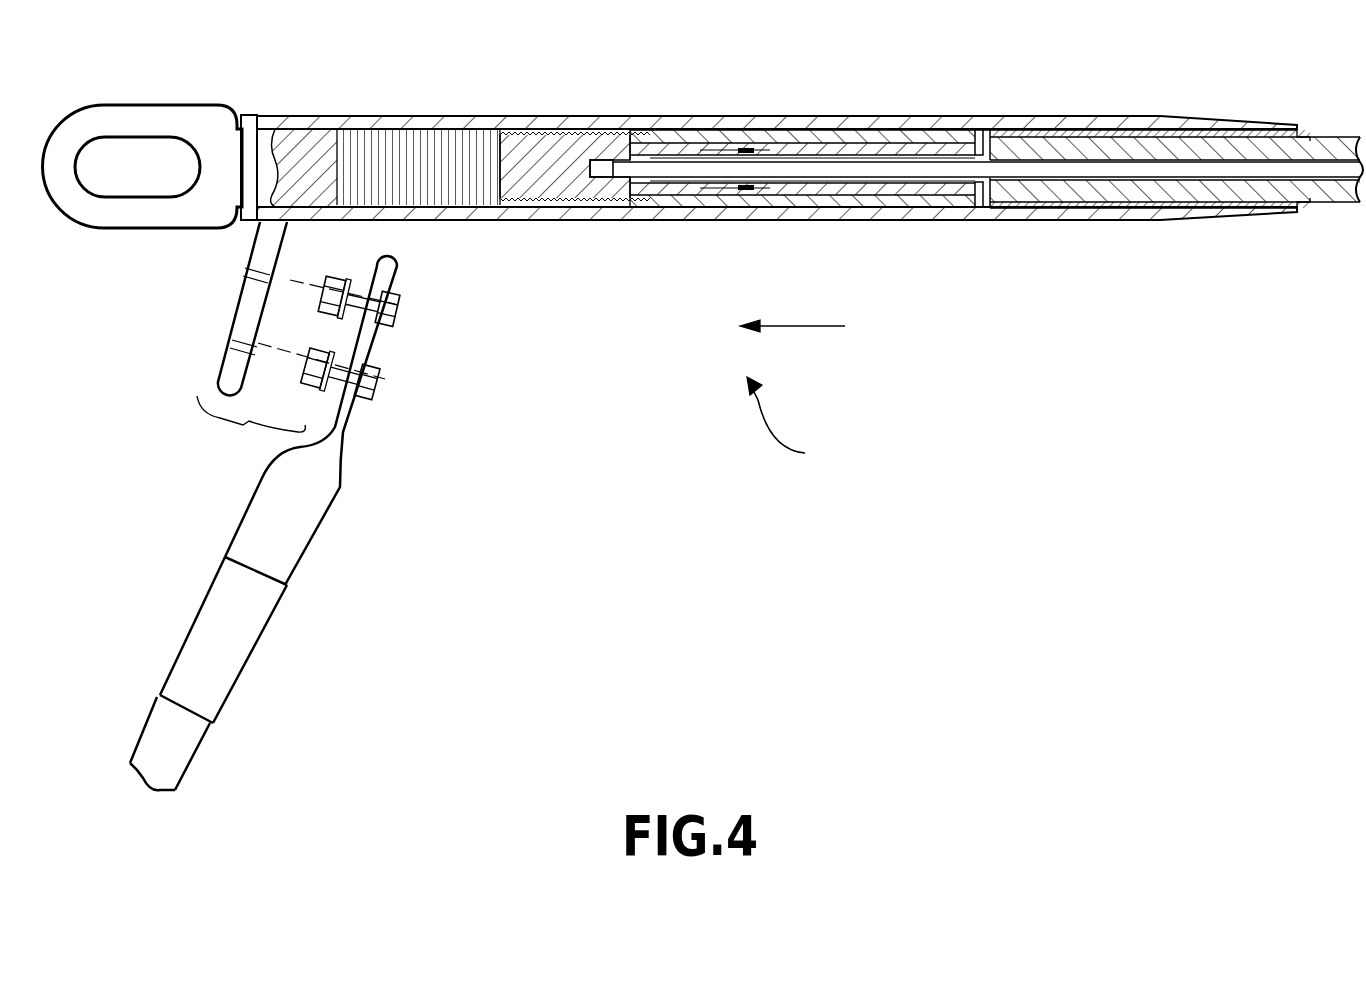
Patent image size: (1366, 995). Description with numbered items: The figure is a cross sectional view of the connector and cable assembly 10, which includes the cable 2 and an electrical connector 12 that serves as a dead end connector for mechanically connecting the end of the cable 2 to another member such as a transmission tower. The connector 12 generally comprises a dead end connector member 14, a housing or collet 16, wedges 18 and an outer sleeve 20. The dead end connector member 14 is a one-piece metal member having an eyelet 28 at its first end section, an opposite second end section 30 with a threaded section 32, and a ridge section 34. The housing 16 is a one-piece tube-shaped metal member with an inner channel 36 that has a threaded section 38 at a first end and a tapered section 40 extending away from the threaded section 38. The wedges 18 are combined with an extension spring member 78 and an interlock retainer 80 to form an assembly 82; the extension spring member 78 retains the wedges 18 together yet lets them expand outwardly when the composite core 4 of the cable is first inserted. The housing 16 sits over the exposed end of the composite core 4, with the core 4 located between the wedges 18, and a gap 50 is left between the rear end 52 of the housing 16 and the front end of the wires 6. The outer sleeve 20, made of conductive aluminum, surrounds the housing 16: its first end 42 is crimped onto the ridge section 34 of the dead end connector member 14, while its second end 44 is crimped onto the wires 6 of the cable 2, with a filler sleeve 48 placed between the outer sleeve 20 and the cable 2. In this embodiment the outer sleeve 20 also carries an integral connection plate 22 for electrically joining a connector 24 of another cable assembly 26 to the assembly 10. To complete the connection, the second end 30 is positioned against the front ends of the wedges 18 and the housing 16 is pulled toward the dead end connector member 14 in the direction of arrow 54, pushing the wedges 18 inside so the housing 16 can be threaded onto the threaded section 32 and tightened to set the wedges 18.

The cable 2 is at (1337, 197).
The composite core 4 is at (994, 212).
The wires 6 is at (1152, 190).
The assembly 10 is at (795, 422).
The electrical connector 12 is at (1026, 228).
The dead end connector member 14 is at (137, 112).
The housing 16 is at (935, 205).
The wedges 18 is at (782, 186).
The outer sleeve 20 is at (330, 112).
The connection plate 22 is at (225, 365).
The connector 24 is at (350, 433).
The cable assembly 26 is at (250, 657).
The eyelet 28 is at (83, 215).
The second end section 30 is at (568, 200).
The threaded section 32 is at (627, 220).
The ridge section 34 is at (467, 210).
The inner channel 36 is at (873, 205).
The threaded section 38 is at (693, 220).
The tapered section 40 is at (830, 148).
The first end 42 is at (412, 116).
The second end 44 is at (1020, 116).
The filler sleeve 48 is at (1140, 133).
The gap 50 is at (988, 135).
The rear end 52 is at (972, 130).
The arrow 54 is at (813, 326).
The extension spring member 78 is at (743, 148).
The interlock retainer 80 is at (663, 145).
The assembly 82 is at (877, 152).